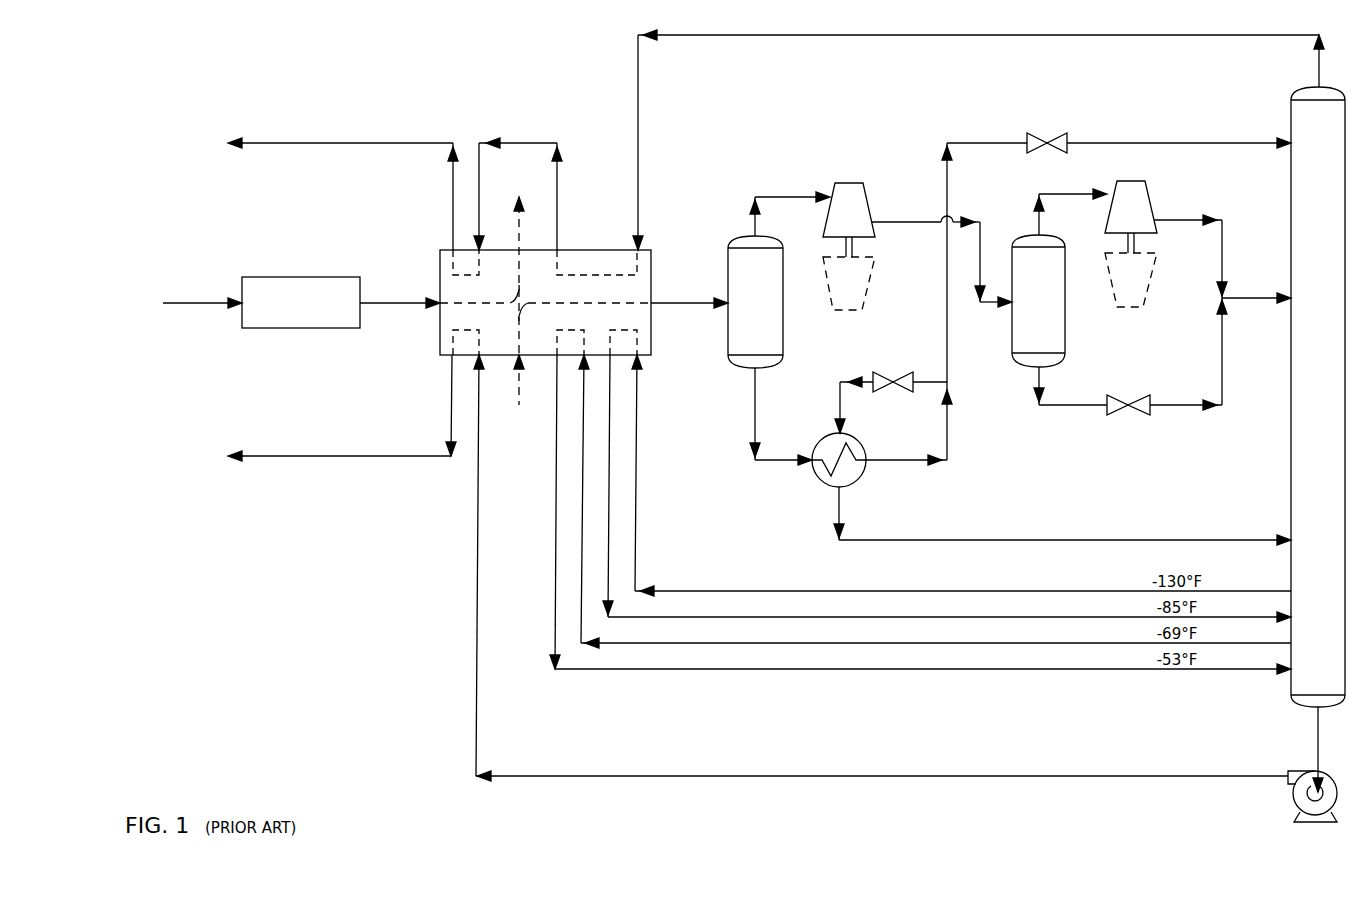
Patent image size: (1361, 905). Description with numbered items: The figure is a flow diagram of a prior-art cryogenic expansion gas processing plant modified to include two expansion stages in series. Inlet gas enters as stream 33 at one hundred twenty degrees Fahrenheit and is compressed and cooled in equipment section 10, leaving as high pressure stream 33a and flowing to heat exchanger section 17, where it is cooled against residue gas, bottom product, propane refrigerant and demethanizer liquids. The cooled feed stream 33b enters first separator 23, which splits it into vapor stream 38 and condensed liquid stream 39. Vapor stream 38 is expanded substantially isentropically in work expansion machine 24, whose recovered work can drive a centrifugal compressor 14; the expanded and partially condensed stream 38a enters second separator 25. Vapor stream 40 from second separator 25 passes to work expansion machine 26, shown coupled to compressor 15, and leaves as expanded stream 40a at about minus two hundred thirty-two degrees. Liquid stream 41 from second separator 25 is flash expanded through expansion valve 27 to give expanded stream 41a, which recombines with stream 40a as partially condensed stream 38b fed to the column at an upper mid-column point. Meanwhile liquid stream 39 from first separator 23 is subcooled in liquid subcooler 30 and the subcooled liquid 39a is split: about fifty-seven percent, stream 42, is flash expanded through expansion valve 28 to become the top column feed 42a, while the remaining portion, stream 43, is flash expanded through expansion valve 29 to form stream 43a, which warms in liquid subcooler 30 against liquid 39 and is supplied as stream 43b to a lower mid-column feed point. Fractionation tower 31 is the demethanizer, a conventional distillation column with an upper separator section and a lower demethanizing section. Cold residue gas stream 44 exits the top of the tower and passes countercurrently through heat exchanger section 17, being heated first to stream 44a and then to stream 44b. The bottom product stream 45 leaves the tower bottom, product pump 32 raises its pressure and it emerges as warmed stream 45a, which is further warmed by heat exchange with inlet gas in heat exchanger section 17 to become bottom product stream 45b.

The equipment section 10 is at (302, 328).
The centrifugal compressor 14 is at (866, 286).
The centrifugal compressor 15 is at (1148, 283).
The heat exchanger section 17 is at (651, 348).
The first separator 23 is at (783, 331).
The work expansion machine 24 is at (866, 183).
The second separator 25 is at (1065, 331).
The work expansion machine 26 is at (1148, 181).
The expansion valve 27 is at (1107, 413).
The expansion valve 28 is at (1068, 134).
The expansion valve 29 is at (873, 375).
The liquid subcooler 30 is at (813, 470).
The fractionation tower 31 is at (1291, 512).
The product pump 32 is at (1295, 806).
The inlet gas stream 33 is at (190, 303).
The high pressure feed gas stream 33a is at (394, 303).
The cooled feed stream 33b is at (684, 303).
The vapor stream 38 is at (779, 197).
The expanded stream 38a is at (909, 222).
The partially condensed stream 38b is at (1259, 298).
The condensed liquid stream 39 is at (767, 460).
The subcooled liquid stream 39a is at (893, 460).
The vapor stream 40 is at (1060, 194).
The expanded stream 40a is at (1222, 250).
The condensed liquid stream 41 is at (1051, 405).
The expanded stream 41a is at (1181, 405).
The subcooled liquid portion 42 is at (980, 143).
The expanded substantially condensed stream 42a is at (1125, 143).
The subcooled liquid portion 43 is at (928, 382).
The expanded stream 43a is at (840, 400).
The warmed partially condensed stream 43b is at (912, 540).
The cold residue gas stream 44 is at (1241, 35).
The residue gas stream 44a is at (521, 143).
The residue gas stream 44b is at (389, 143).
The bottom product stream 45 is at (1318, 730).
The high pressure bottom product stream 45a is at (1181, 776).
The bottom product stream 45b is at (385, 456).